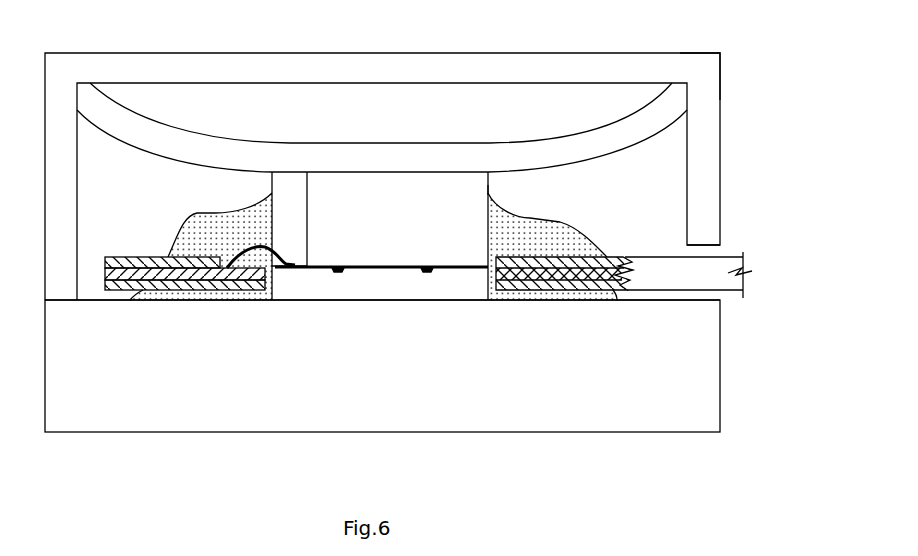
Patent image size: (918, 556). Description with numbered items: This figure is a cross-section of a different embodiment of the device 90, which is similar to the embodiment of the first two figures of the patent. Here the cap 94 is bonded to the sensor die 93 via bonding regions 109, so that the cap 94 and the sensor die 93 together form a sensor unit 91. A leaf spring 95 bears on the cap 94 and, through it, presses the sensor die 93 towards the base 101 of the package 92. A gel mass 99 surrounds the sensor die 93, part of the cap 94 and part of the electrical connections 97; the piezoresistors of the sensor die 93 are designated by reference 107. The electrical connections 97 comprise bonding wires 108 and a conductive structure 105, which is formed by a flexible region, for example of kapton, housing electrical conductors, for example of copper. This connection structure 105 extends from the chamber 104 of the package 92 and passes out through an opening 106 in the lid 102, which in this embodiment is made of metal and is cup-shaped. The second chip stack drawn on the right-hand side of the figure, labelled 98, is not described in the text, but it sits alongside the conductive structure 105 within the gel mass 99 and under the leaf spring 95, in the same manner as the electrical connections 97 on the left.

The device 90 is at (752, 98).
The sensor unit 91 is at (491, 187).
The package 92 is at (721, 73).
The sensor die 93 is at (311, 298).
The cap 94 is at (405, 226).
The leaf spring 95 is at (556, 145).
The electrical connections 97 is at (133, 255).
The second chip stack 98 is at (553, 276).
The gel mass 99 is at (233, 221).
The base 101 is at (708, 394).
The lid 102 is at (712, 163).
The chamber 104 is at (234, 126).
The conductive structure 105 is at (653, 263).
The opening 106 is at (716, 252).
The piezoresistors 107 is at (338, 273).
The bonding wires 108 is at (247, 256).
The bonding regions 109 is at (313, 265).